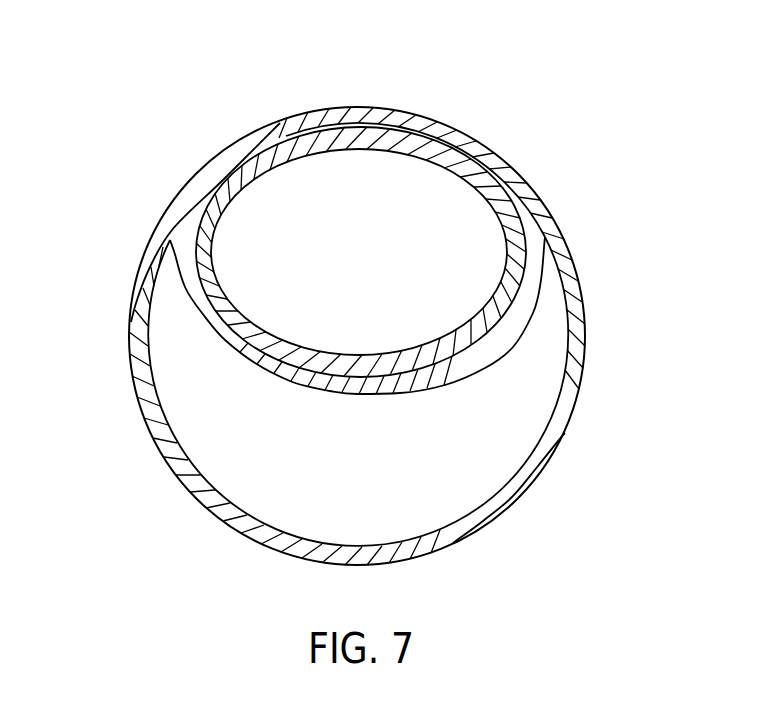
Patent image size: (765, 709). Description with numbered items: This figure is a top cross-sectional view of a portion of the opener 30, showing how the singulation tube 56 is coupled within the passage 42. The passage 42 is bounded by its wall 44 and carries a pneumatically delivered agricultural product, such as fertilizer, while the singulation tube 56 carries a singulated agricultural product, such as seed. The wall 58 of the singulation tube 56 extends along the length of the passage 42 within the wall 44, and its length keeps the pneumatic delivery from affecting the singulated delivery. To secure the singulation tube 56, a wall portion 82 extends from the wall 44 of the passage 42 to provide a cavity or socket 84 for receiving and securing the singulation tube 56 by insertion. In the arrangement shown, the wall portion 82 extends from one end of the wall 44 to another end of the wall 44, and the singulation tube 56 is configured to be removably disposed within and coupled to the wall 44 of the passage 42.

The opener 30 is at (135, 145).
The passage 42 is at (222, 474).
The wall 44 is at (520, 497).
The singulation tube 56 is at (318, 182).
The wall 58 is at (456, 142).
The wall portion 82 is at (500, 327).
The cavity or socket 84 is at (522, 285).